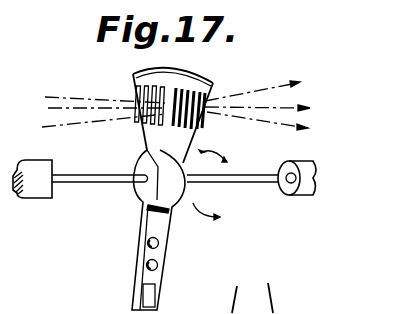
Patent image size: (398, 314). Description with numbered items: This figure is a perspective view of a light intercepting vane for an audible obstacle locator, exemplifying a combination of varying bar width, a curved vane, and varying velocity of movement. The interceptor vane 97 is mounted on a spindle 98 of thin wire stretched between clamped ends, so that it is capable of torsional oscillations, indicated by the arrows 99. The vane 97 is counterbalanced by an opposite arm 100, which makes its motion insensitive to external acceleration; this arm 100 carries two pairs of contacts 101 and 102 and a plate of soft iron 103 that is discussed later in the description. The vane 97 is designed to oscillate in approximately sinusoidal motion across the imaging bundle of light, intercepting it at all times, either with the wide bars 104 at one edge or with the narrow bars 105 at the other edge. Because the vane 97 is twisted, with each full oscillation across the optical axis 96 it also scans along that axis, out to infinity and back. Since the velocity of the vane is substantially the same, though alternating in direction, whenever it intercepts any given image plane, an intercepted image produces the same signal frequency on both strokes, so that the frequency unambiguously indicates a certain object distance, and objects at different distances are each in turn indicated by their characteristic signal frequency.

The optical axis 96 is at (187, 105).
The interceptor vane 97 is at (192, 146).
The spindle 98 is at (273, 183).
The arrows 99 is at (221, 189).
The opposite arm 100 is at (143, 229).
The pair of contacts 101 is at (158, 265).
The pair of contacts 102 is at (159, 243).
The plate of soft iron 103 is at (156, 294).
The wide bars 104 is at (133, 75).
The narrow bars 105 is at (214, 82).